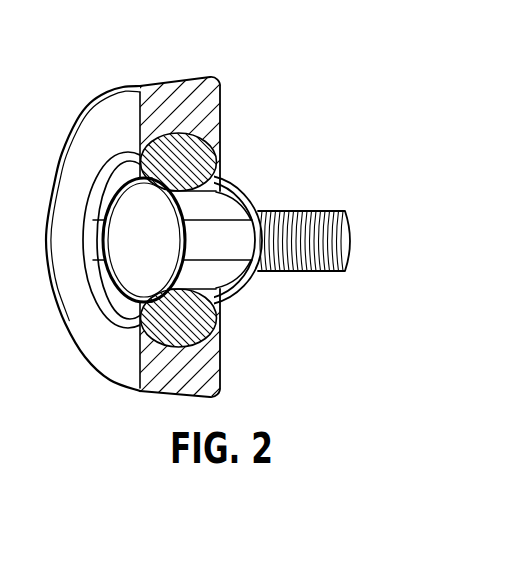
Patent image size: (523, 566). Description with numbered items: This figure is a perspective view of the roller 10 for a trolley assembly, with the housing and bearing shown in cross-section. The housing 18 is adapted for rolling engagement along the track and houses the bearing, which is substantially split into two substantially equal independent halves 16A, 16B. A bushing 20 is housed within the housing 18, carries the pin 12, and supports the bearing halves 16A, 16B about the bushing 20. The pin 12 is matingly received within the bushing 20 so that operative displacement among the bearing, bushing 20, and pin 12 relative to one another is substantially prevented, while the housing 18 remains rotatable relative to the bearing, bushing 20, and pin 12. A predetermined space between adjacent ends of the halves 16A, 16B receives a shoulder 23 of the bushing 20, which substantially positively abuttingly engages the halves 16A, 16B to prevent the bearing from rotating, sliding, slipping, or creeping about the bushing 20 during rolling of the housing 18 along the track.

The roller 10 is at (238, 201).
The pin 12 is at (368, 239).
The first half of the bearing 16A is at (240, 164).
The second half of the bearing 16B is at (236, 316).
The housing 18 is at (241, 105).
The bushing 20 is at (271, 288).
The shoulder 23 is at (255, 183).